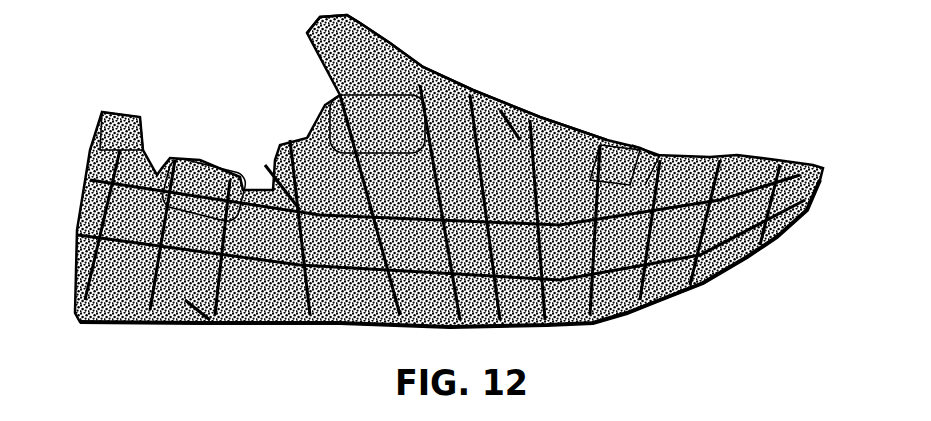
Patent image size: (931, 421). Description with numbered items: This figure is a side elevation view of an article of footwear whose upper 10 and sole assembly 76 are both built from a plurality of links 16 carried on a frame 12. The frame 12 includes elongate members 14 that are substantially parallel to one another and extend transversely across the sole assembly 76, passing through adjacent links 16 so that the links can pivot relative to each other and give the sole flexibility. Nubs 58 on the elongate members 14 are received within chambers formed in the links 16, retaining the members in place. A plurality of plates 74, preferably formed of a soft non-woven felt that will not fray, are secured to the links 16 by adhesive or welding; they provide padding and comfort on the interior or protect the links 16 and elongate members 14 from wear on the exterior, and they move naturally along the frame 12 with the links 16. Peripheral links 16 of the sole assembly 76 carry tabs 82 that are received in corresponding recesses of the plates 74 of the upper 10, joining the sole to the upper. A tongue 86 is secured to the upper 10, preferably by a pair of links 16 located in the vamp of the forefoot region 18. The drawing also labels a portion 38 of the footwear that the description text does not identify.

The upper 10 is at (742, 145).
The frame 12 is at (280, 187).
The elongate members 14 is at (330, 133).
The links 16 is at (532, 130).
The forefoot region 18 is at (609, 138).
The heel region 38 is at (158, 141).
The nubs 58 is at (632, 145).
The plates 74 is at (205, 167).
The sole assembly 76 is at (662, 307).
The tabs 82 is at (268, 324).
The tongue 86 is at (472, 93).